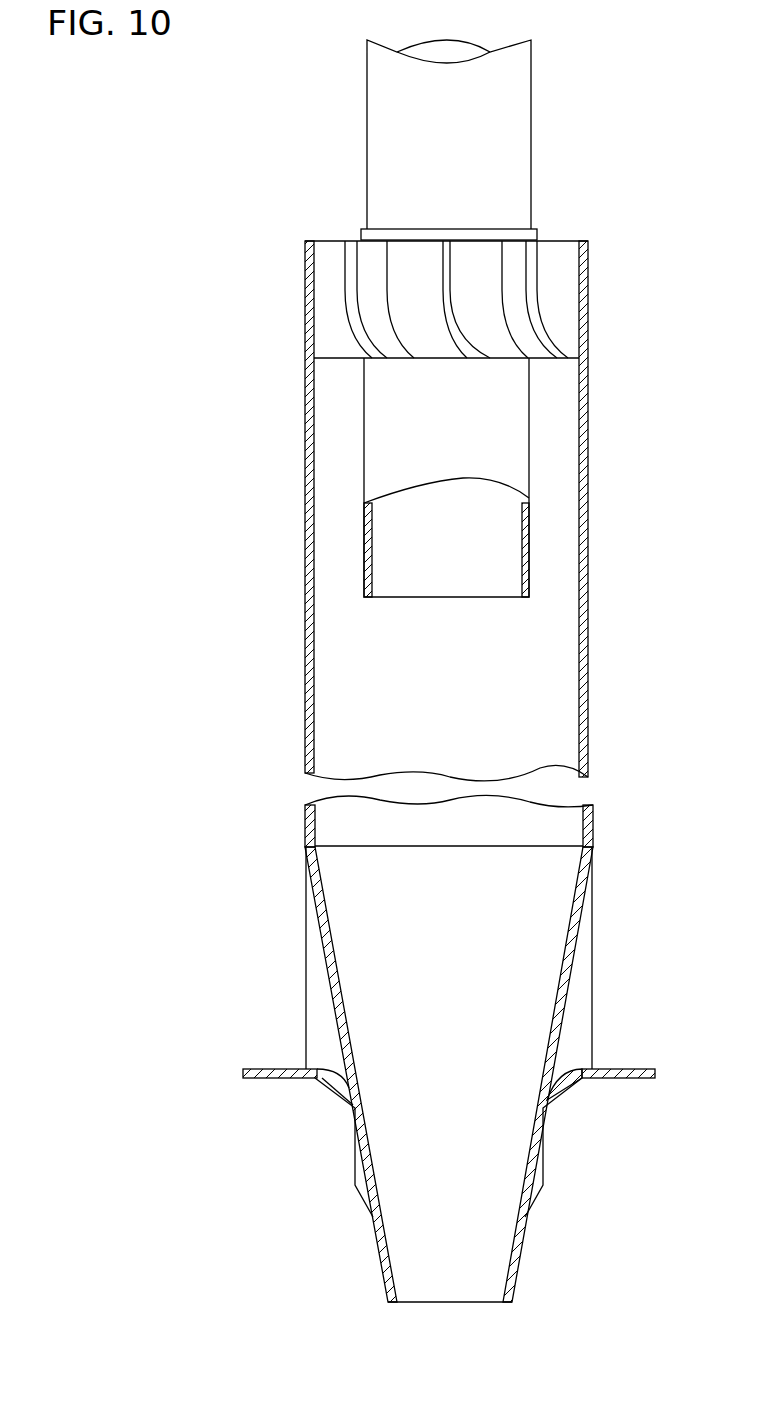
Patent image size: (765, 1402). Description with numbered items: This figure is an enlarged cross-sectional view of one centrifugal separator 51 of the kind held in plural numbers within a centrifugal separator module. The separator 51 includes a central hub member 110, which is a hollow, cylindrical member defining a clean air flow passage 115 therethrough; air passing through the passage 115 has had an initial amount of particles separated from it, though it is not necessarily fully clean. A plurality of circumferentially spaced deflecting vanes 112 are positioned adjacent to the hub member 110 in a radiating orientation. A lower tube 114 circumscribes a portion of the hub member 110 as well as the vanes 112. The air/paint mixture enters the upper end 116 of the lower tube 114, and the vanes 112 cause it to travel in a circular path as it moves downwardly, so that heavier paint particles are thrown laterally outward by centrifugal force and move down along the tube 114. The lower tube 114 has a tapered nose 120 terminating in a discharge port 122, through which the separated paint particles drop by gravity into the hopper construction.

The centrifugal separator 51 is at (243, 436).
The central hub member 110 is at (532, 99).
The deflecting vanes 112 is at (522, 268).
The lower tube 114 is at (587, 592).
The clean air flow passage 115 is at (522, 573).
The upper end 116 is at (330, 240).
The tapered nose 120 is at (563, 1017).
The discharge port 122 is at (505, 1270).